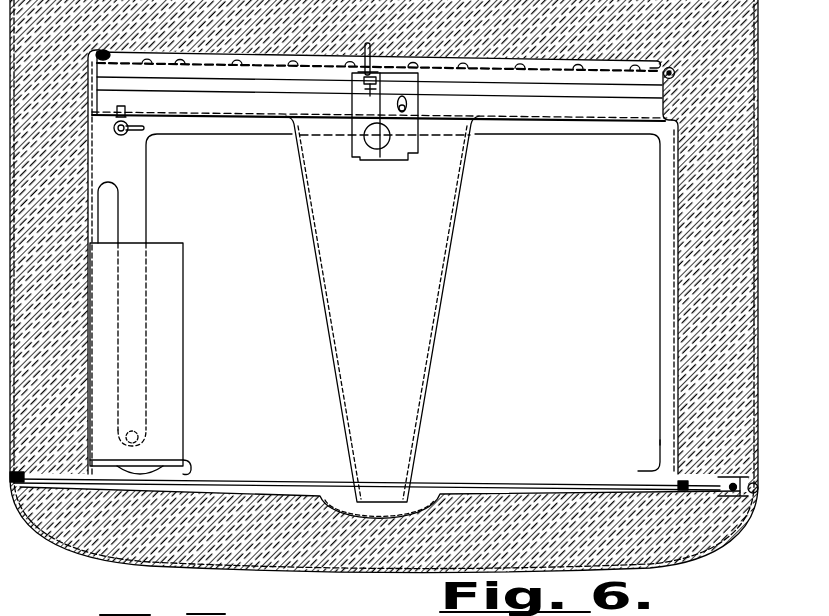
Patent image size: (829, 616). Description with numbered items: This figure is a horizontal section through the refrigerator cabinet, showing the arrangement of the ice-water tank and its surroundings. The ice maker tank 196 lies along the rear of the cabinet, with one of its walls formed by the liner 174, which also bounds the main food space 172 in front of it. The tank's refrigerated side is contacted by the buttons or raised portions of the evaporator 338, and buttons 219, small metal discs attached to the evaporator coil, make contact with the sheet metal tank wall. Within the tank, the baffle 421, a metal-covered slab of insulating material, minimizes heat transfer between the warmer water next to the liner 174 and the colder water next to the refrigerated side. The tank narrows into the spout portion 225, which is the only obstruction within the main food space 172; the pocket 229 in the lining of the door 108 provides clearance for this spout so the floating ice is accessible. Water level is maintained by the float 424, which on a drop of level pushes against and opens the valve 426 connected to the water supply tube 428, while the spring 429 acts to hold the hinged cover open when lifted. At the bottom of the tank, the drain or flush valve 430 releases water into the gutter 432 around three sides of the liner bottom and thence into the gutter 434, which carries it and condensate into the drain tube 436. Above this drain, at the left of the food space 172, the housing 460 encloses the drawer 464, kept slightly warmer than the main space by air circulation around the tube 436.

The door 108 is at (258, 544).
The main food space 172 is at (566, 405).
The liner 174 is at (678, 296).
The ice maker tank 196 is at (120, 62).
The buttons 219 is at (520, 63).
The spout portion 225 is at (443, 288).
The pocket 229 is at (418, 496).
The evaporator 338 is at (106, 52).
The baffle 421 is at (533, 93).
The float 424 is at (379, 148).
The valve 426 is at (363, 78).
The water supply tube 428 is at (372, 50).
The spring 429 is at (408, 107).
The drain or flush valve 430 is at (121, 136).
The gutter 432 is at (549, 134).
The gutter 434 is at (135, 230).
The drain tube 436 is at (134, 434).
The housing 460 is at (184, 363).
The drawer 464 is at (194, 470).